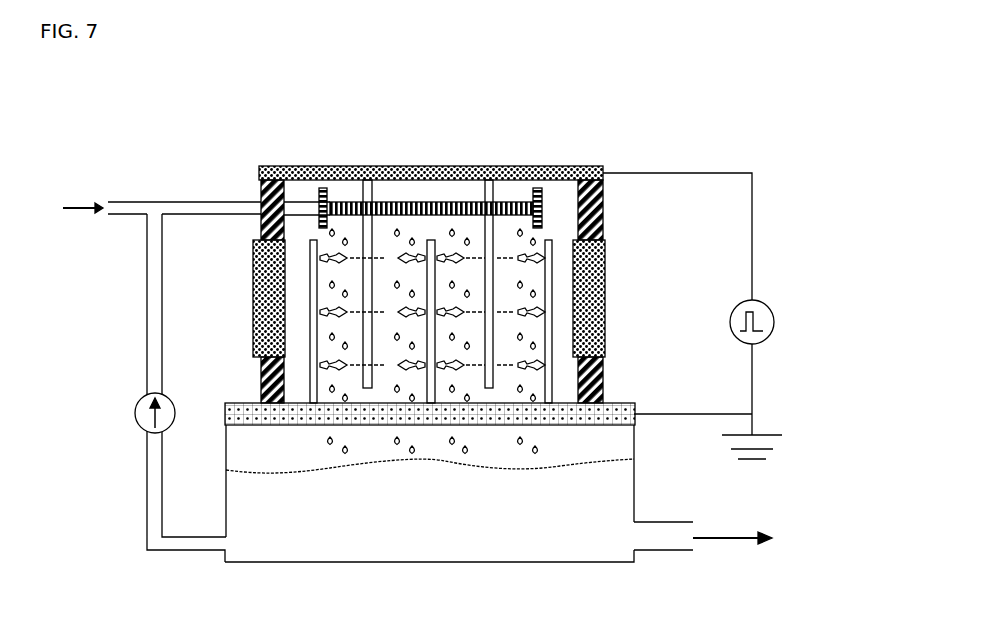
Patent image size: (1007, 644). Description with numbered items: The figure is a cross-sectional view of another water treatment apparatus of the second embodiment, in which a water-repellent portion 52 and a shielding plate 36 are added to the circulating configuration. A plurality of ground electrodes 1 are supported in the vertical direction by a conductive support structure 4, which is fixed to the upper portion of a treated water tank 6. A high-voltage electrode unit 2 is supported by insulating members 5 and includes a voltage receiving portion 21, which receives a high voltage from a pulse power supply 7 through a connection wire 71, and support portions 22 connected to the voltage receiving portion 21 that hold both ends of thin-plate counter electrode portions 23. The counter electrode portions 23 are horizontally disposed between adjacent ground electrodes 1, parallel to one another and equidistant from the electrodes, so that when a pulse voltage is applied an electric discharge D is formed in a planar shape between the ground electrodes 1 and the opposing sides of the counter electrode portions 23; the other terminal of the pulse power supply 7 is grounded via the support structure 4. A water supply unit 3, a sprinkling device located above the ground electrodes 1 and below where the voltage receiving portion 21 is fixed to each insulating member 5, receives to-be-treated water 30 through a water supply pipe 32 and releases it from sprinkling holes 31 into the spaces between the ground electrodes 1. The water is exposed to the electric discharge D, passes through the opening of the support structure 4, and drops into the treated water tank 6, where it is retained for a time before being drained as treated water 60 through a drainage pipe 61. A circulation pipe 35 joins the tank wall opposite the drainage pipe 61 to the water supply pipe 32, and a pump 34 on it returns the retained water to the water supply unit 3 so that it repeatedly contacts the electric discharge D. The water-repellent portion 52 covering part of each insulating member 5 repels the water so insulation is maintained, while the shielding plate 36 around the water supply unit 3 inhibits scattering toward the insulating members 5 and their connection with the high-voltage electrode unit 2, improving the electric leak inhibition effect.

The ground electrode 1 is at (390, 238).
The high-voltage electrode unit 2 is at (372, 168).
The water supply unit 3 is at (407, 203).
The support structure 4 is at (282, 426).
The insulating member 5 is at (605, 372).
The treated water tank 6 is at (227, 490).
The pulse power supply 7 is at (767, 302).
The voltage receiving portion 21 is at (603, 170).
The support portion 22 is at (395, 337).
The counter electrode portion 23 is at (507, 257).
The to-be-treated water 30 is at (249, 349).
The sprinkling hole 31 is at (390, 219).
The water supply pipe 32 is at (222, 202).
The pump 34 is at (135, 410).
The circulation pipe 35 is at (147, 470).
The shielding plate 36 is at (542, 200).
The water-repellent portion 52 is at (605, 277).
The treated water 60 is at (715, 537).
The drainage pipe 61 is at (665, 550).
The connection wire 71 is at (672, 173).
The electric discharge D is at (312, 376).